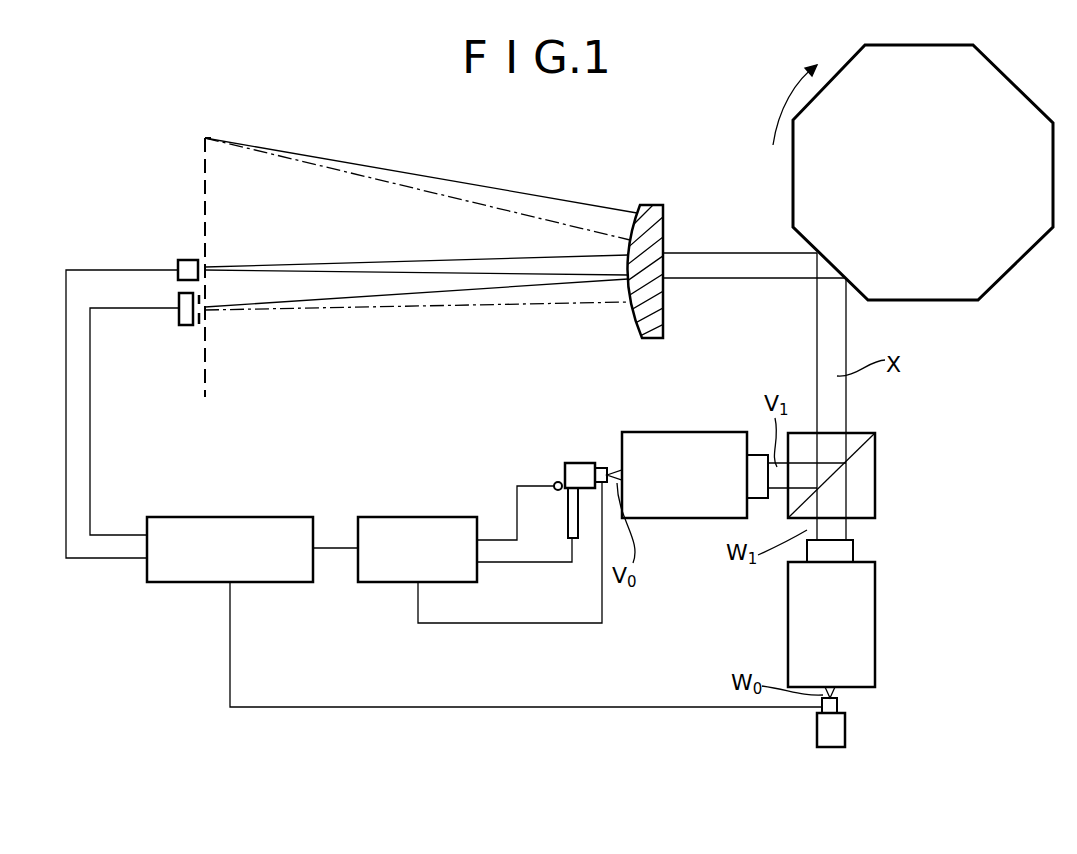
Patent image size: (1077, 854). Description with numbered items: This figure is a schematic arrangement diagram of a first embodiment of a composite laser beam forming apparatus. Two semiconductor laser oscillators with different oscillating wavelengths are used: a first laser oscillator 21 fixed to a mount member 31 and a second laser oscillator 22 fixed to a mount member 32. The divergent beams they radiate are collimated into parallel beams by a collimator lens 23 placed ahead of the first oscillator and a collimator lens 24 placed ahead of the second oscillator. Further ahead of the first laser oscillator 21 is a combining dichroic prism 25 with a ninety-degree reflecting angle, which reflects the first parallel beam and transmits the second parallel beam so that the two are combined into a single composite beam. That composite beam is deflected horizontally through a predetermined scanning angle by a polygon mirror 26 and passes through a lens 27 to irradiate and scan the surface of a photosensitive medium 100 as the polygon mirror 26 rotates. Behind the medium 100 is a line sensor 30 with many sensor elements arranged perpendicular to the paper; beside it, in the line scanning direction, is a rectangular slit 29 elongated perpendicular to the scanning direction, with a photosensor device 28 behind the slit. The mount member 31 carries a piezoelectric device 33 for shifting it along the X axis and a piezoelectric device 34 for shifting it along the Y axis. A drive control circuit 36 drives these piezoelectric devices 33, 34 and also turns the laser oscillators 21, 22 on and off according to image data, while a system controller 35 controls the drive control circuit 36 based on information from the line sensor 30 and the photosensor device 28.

The photosensitive medium 100 is at (205, 163).
The line sensor 30 is at (187, 260).
The photosensor device 28 is at (178, 318).
The rectangular slit 29 is at (200, 326).
The lens 27 is at (646, 205).
The polygon mirror 26 is at (839, 77).
The system controller 35 is at (252, 517).
The drive control circuit 36 is at (442, 517).
The mount member 31 is at (577, 463).
The first semiconductor laser oscillator 21 is at (605, 468).
The piezoelectric device 34 is at (557, 482).
The piezoelectric device 33 is at (567, 523).
The collimator lens 23 is at (697, 445).
The combining dichroic prism 25 is at (875, 488).
The collimator lens 24 is at (863, 607).
The second semiconductor laser oscillator 22 is at (840, 705).
The mount member 32 is at (837, 730).